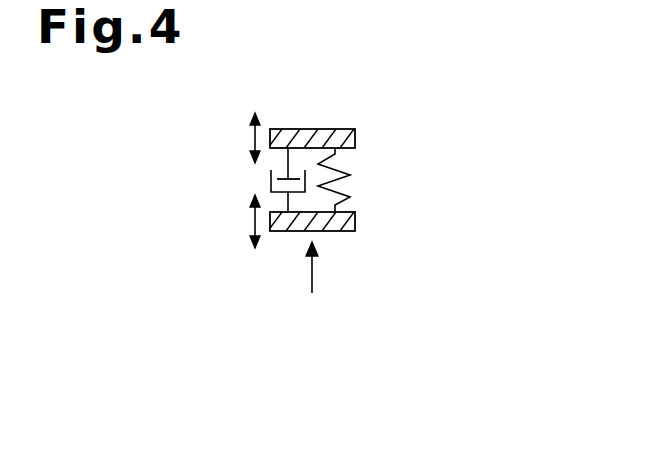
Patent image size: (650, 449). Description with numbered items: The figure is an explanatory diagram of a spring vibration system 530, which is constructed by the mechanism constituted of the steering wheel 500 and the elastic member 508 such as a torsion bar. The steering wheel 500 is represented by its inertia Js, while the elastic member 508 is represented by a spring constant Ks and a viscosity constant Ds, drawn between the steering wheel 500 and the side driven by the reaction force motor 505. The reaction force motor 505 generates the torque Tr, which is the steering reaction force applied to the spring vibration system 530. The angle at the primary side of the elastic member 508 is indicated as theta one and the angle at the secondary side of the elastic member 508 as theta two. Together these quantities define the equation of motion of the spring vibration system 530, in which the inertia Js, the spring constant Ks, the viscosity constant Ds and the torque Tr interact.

The spring vibration system 530 is at (514, 88).
The steering wheel 500 is at (404, 141).
The elastic member 508 is at (404, 182).
The reaction force motor 505 is at (404, 222).